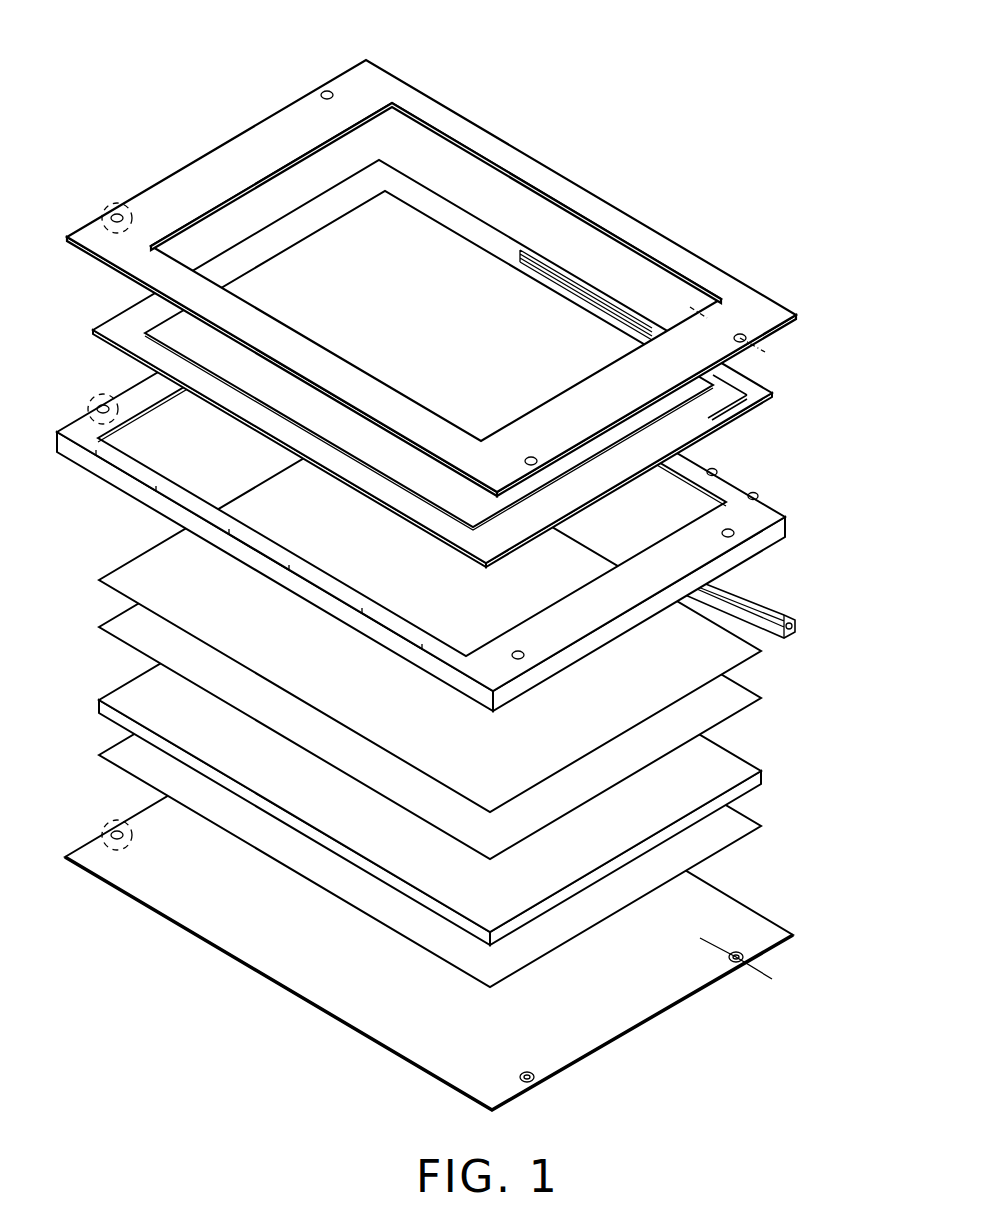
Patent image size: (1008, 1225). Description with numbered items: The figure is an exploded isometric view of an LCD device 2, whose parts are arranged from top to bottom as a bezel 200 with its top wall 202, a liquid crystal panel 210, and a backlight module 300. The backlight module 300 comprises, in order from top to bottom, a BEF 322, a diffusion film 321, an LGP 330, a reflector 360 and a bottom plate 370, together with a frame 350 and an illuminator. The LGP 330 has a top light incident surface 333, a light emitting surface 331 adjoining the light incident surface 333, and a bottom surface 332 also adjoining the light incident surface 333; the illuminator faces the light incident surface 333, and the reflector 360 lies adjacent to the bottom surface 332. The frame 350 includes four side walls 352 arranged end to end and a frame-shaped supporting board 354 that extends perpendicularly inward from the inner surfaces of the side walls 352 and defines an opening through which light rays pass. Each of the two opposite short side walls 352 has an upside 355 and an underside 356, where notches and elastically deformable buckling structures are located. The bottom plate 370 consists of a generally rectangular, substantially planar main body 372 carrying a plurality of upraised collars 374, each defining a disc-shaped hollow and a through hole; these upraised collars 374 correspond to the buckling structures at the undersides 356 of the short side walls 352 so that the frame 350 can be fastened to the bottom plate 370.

The LCD device 2 is at (397, 46).
The bezel 200 is at (556, 146).
The top wall of front frame 202 is at (567, 188).
The liquid crystal panel 210 is at (758, 403).
The backlight module 300 is at (830, 422).
The frame 350 is at (448, 485).
The side wall 352 is at (757, 542).
The supporting board 354 is at (733, 487).
The upside 355 is at (753, 520).
The underside 356 is at (761, 652).
The BEF 322 is at (700, 595).
The diffusion film 321 is at (762, 699).
The LGP 330 is at (138, 667).
The light emitting surface 331 is at (723, 758).
The bottom surface 332 is at (744, 807).
The light incident surface 333 is at (768, 769).
The reflector 360 is at (717, 842).
The bottom plate 370 is at (440, 909).
The main body 372 is at (722, 917).
The upraised collar 374 is at (533, 1082).